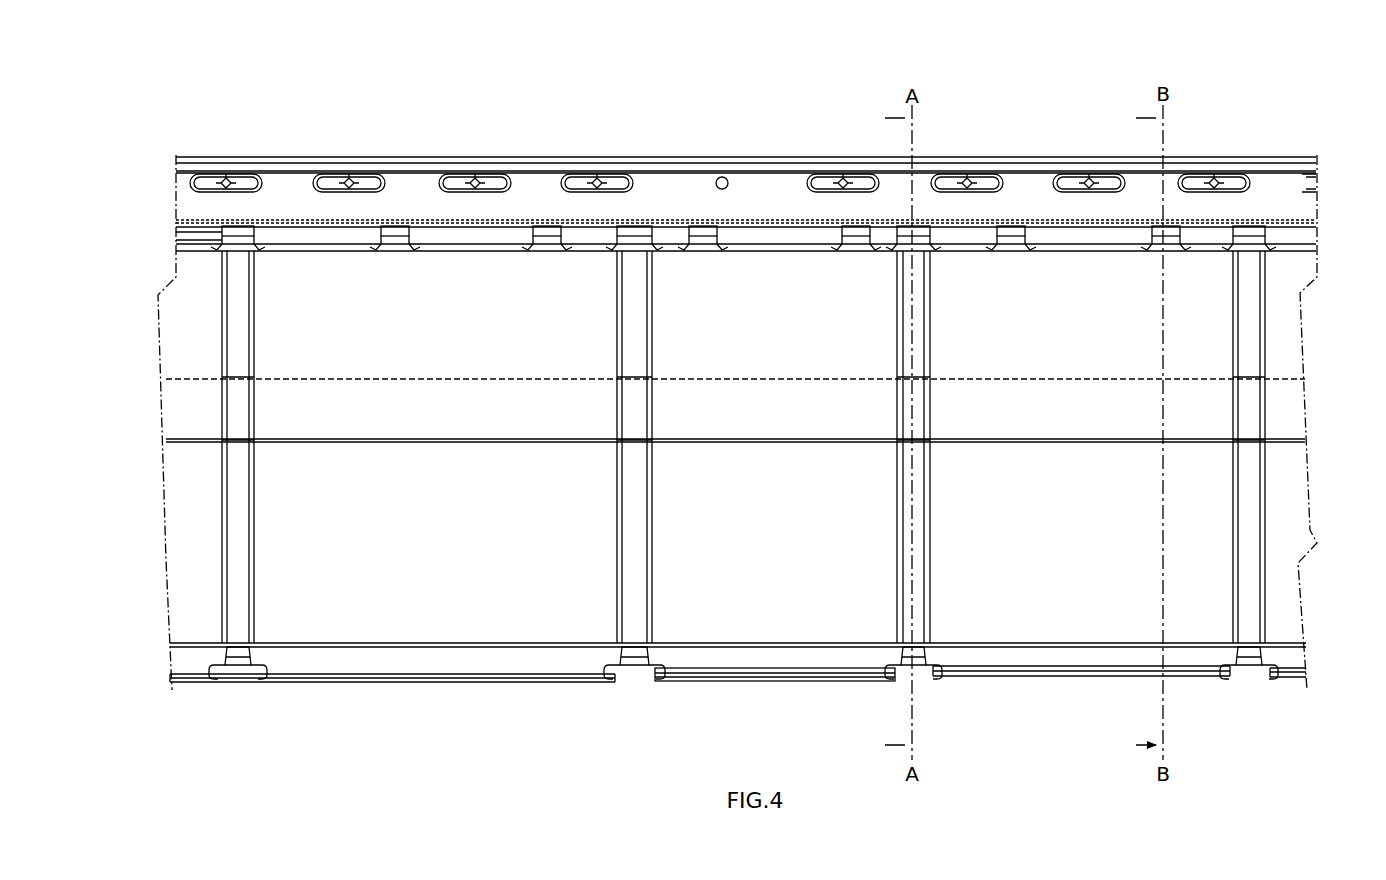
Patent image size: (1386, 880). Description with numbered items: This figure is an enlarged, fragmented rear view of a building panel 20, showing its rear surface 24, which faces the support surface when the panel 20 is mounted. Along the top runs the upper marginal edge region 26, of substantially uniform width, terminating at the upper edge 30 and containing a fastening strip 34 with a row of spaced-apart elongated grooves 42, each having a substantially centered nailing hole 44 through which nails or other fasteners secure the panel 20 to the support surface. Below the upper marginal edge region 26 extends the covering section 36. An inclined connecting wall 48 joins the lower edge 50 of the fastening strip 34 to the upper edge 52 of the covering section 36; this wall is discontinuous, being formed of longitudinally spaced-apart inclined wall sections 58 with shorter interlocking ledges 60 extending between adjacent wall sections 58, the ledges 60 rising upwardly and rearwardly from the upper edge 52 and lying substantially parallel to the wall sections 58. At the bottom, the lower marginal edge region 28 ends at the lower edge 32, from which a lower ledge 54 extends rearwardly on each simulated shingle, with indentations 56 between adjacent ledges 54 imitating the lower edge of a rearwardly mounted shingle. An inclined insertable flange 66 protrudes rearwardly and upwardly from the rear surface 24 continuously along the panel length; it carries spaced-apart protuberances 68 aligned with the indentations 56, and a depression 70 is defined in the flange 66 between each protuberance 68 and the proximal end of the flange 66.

The panel 20 is at (597, 74).
The rear surface 24 is at (762, 368).
The upper marginal edge region 26 is at (767, 196).
The lower marginal edge region 28 is at (773, 650).
The upper edge 30 is at (433, 158).
The lower edge 32 is at (495, 684).
The fastening strip 34 is at (285, 192).
The covering section 36 is at (333, 593).
The elongated grooves 42 is at (238, 183).
The nailing hole 44 is at (226, 178).
The inclined connecting wall 48 is at (183, 234).
The lower edge of the fastening strip 50 is at (402, 243).
The upper edge of the covering section 52 is at (693, 248).
The lower ledge 54 is at (400, 680).
The indentations 56 is at (237, 687).
The inclined wall sections 58 is at (395, 226).
The interlocking ledges 60 is at (492, 243).
The inclined insertable flange 66 is at (1040, 662).
The protuberances 68 is at (232, 664).
The depression 70 is at (247, 670).